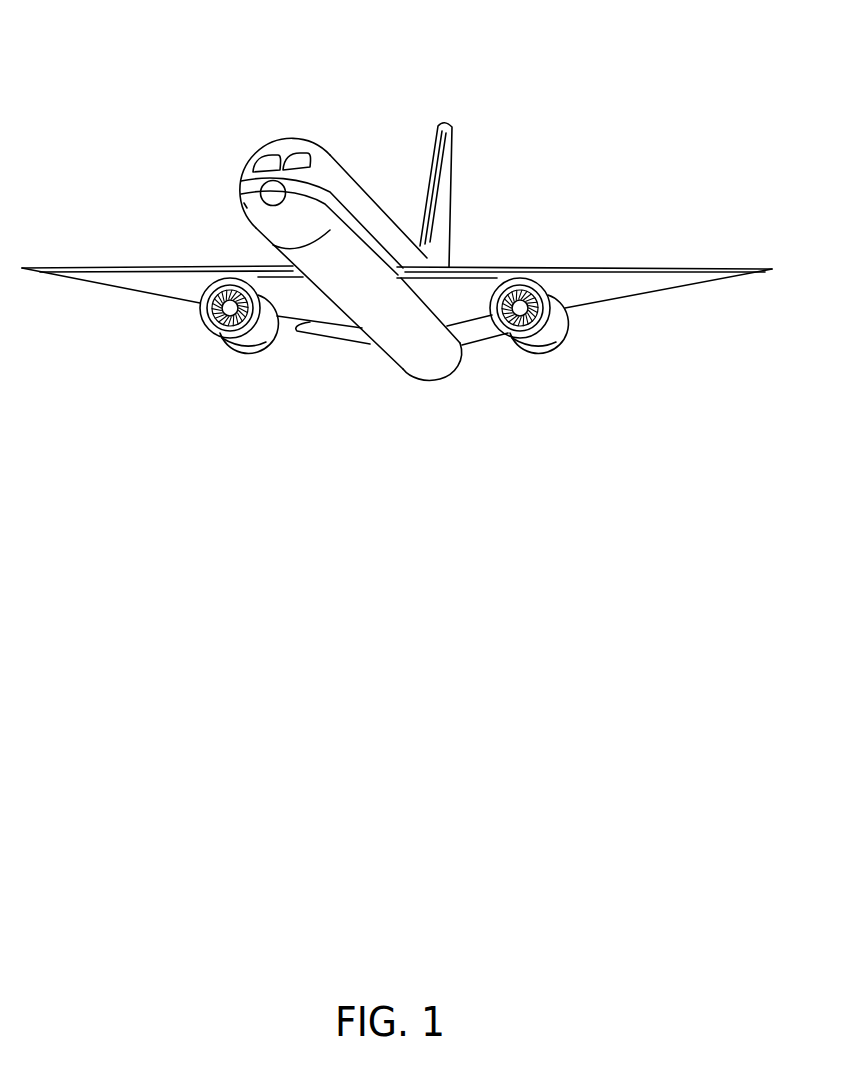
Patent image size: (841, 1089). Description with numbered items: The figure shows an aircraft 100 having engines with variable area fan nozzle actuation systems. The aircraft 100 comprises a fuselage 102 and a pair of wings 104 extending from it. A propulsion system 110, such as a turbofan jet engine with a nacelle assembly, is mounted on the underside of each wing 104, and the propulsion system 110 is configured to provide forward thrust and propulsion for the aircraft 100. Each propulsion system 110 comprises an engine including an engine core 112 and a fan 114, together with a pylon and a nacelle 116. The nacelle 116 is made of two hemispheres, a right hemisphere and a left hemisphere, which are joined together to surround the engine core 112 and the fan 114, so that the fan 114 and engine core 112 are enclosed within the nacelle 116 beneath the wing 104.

The aircraft 100 is at (153, 110).
The fuselage 102 is at (362, 195).
The wing 104 is at (135, 266).
The propulsion system 110 is at (243, 348).
The engine core 112 is at (260, 337).
The fan 114 is at (203, 330).
The nacelle 116 is at (193, 305).